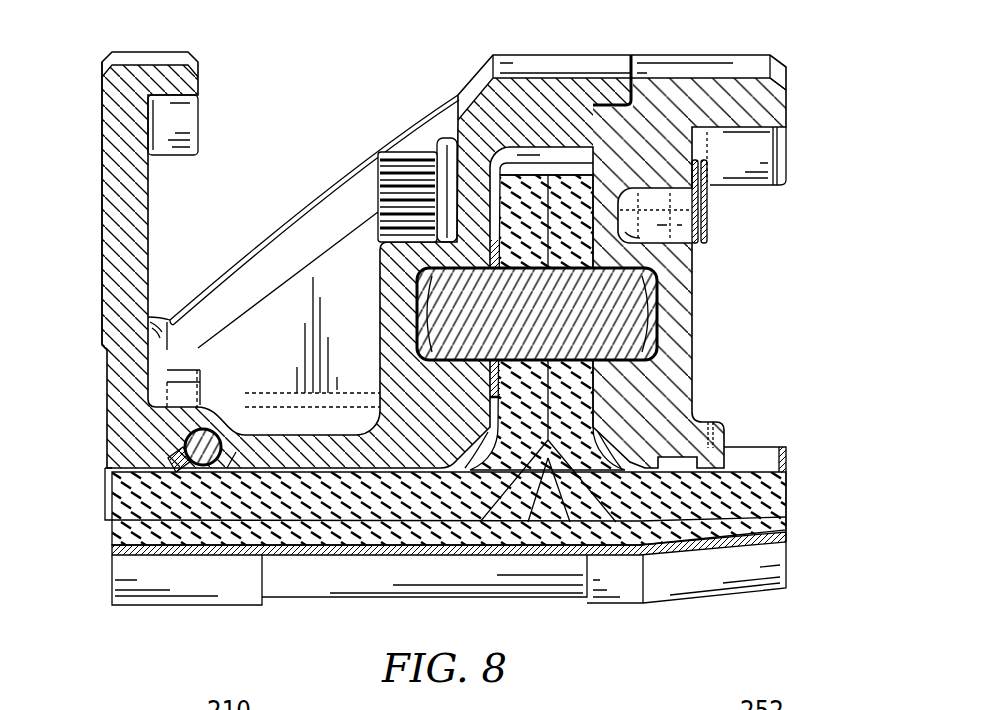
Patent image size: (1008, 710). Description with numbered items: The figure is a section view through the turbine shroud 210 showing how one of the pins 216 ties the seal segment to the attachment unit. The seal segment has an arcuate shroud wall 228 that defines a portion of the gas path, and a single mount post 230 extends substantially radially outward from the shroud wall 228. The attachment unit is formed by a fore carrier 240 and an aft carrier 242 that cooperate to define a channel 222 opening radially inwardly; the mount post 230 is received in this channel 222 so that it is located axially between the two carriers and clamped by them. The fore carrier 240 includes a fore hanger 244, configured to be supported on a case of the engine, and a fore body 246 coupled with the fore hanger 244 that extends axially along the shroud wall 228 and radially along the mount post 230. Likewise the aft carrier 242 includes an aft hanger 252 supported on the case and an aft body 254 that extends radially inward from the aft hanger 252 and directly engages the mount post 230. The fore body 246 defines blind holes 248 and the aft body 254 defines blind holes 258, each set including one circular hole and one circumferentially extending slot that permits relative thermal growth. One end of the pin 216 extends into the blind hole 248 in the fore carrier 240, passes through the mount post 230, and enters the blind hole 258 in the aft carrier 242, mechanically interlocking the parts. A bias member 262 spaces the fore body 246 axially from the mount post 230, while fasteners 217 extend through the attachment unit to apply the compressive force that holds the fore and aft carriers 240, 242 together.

The turbine shroud 210 is at (280, 68).
The pins 216 is at (628, 283).
The fasteners 217 is at (404, 153).
The channel 222 is at (556, 146).
The shroud wall 228 is at (99, 532).
The mount post 230 is at (581, 396).
The fore carrier 240 is at (85, 228).
The aft carrier 242 is at (802, 108).
The fore hanger 244 is at (110, 103).
The fore body 246 is at (391, 385).
The blind holes 248 is at (369, 225).
The aft hanger 252 is at (783, 97).
The aft body 254 is at (672, 424).
The blind holes 258 is at (651, 328).
The bias member 262 is at (503, 448).